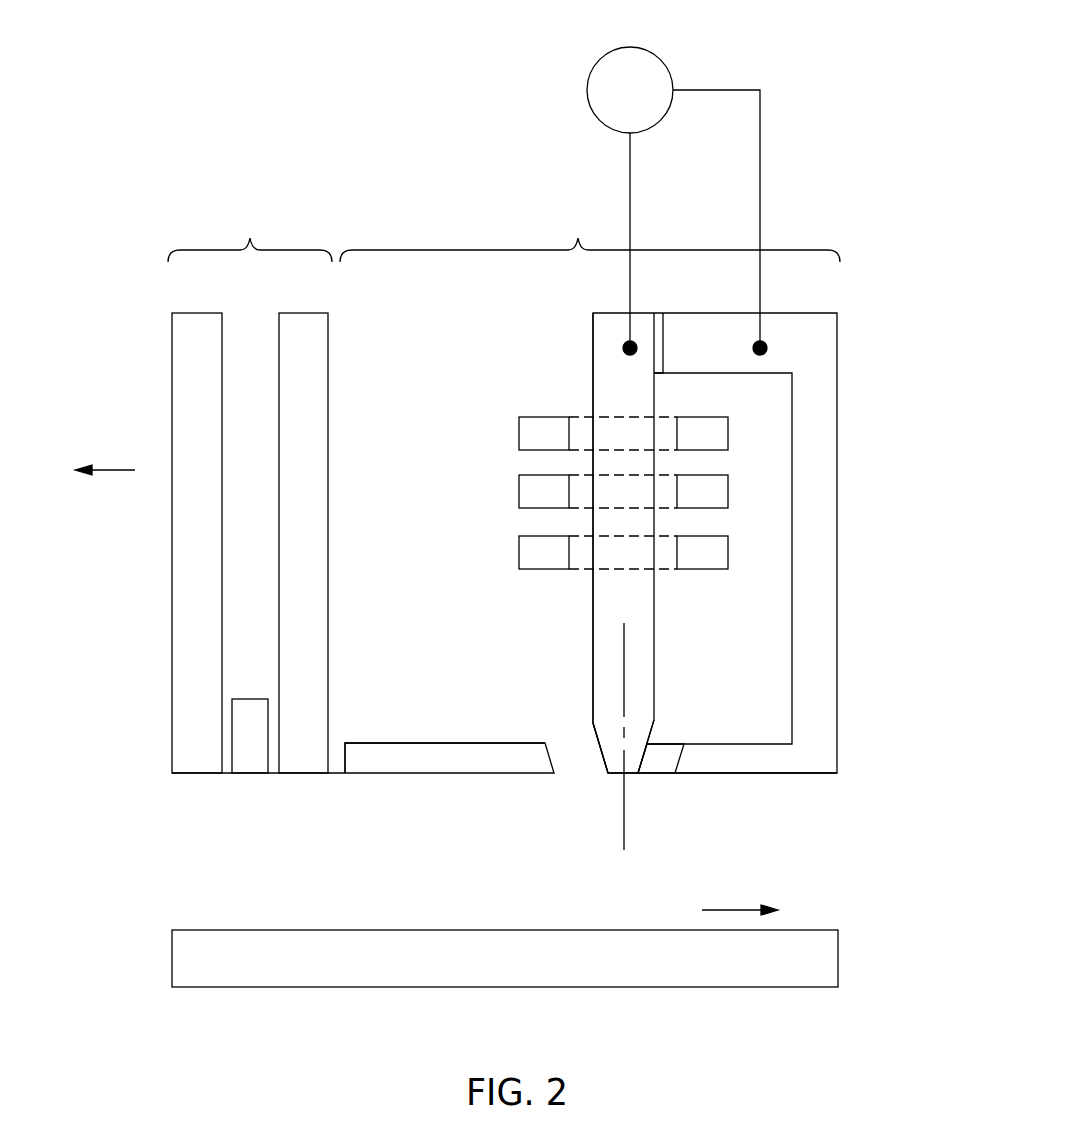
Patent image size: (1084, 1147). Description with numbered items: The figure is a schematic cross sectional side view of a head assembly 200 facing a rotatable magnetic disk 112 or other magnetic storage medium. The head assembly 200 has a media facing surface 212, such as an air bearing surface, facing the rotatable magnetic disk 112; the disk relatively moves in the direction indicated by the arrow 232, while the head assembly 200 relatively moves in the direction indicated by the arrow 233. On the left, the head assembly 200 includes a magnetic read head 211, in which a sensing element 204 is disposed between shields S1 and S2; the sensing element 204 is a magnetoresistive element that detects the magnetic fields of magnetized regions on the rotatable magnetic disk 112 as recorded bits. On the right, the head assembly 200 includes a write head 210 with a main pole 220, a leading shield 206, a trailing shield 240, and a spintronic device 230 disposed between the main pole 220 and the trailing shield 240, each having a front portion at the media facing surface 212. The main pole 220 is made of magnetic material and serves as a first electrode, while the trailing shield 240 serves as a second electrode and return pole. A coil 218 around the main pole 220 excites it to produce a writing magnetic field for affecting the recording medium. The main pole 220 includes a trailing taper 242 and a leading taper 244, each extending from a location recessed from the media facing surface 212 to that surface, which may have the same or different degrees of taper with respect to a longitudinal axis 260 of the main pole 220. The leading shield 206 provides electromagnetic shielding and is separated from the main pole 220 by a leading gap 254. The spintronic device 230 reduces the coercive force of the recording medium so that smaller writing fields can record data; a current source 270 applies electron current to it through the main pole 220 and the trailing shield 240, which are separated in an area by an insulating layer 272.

The head assembly 200 is at (210, 118).
The magnetic read head 211 is at (250, 231).
The write head 210 is at (590, 230).
The shield S1 is at (192, 760).
The shield S2 is at (300, 760).
The sensing element 204 is at (248, 765).
The leading shield 206 is at (388, 773).
The leading gap 254 is at (576, 773).
The trailing shield 240 is at (805, 760).
The media facing surface 212 is at (732, 776).
The main pole 220 is at (637, 608).
The leading taper 244 is at (591, 730).
The trailing taper 242 is at (653, 724).
The spintronic device 230 is at (655, 775).
The insulating layer 272 is at (664, 345).
The current source 270 is at (657, 53).
The coil 218 is at (538, 572).
The longitudinal axis 260 is at (622, 838).
The arrow 233 is at (118, 468).
The arrow 232 is at (730, 908).
The rotatable magnetic disk 112 is at (838, 957).